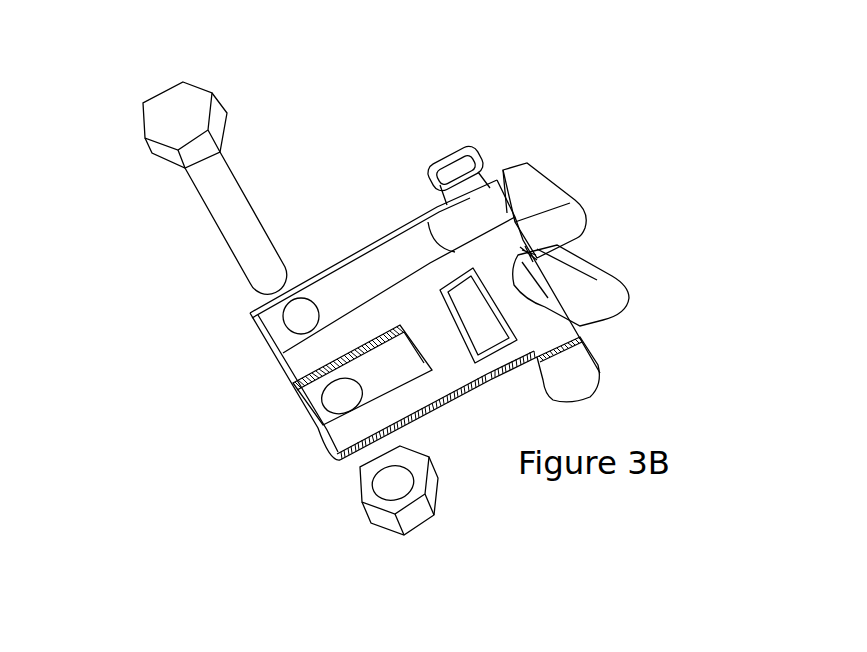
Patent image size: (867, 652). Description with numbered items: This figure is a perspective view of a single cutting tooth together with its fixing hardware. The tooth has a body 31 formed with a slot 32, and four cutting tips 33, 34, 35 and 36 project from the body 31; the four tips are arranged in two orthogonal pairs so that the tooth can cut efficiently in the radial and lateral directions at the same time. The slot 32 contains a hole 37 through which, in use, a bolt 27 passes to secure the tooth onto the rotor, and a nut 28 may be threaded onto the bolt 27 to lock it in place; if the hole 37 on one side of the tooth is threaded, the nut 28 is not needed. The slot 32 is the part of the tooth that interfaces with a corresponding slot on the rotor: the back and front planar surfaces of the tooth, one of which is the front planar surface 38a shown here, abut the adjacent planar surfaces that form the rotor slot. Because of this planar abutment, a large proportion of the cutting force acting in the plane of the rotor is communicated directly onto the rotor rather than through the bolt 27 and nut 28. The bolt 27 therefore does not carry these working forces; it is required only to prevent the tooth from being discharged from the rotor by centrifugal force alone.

The bolt 27 is at (213, 220).
The nut 28 is at (340, 505).
The body 31 is at (395, 237).
The slot 32 is at (292, 385).
The cutting tip 33 is at (500, 173).
The cutting tip 34 is at (570, 203).
The cutting tip 35 is at (614, 281).
The cutting tip 36 is at (588, 347).
The hole 37 is at (302, 298).
The front planar surface 38a is at (423, 333).